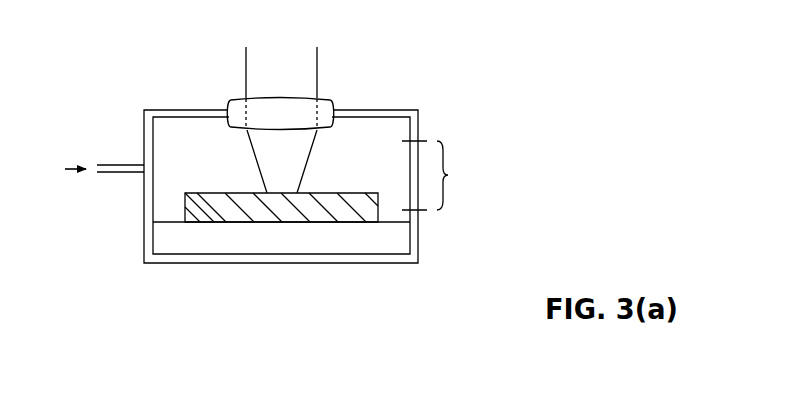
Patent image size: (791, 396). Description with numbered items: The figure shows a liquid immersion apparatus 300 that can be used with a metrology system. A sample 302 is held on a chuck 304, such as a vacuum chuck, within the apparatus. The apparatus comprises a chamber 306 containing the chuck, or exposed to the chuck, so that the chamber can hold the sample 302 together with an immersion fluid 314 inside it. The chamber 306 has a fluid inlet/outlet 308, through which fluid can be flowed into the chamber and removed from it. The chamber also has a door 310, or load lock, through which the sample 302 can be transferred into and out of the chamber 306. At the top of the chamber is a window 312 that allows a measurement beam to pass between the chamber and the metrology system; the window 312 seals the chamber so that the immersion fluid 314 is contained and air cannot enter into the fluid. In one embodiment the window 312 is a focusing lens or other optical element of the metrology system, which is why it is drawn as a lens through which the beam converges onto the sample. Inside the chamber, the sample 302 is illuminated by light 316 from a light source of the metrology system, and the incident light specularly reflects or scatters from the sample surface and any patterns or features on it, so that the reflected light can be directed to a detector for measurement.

The liquid immersion apparatus 300 is at (83, 82).
The sample 302 is at (315, 210).
The chuck 304 is at (398, 238).
The chamber 306 is at (178, 109).
The fluid inlet/outlet 308 is at (122, 164).
The door 310 is at (464, 175).
The window 312 is at (327, 112).
The immersion fluid 314 is at (383, 140).
The light 316 is at (302, 65).